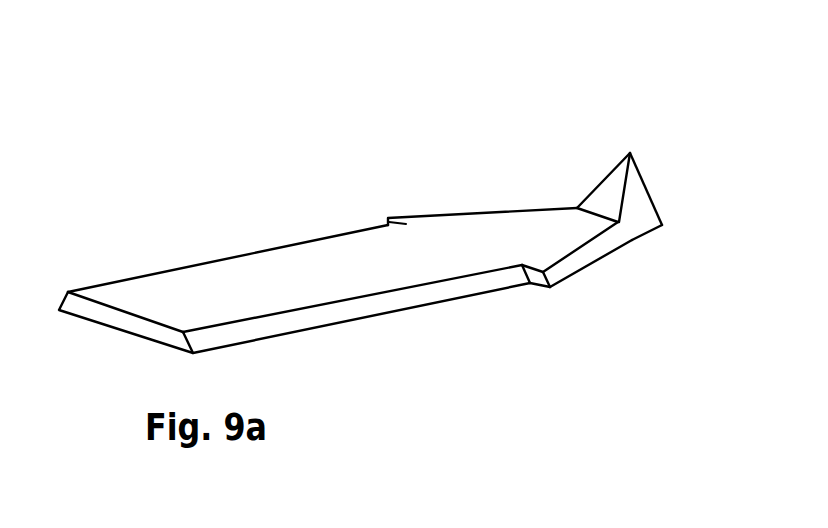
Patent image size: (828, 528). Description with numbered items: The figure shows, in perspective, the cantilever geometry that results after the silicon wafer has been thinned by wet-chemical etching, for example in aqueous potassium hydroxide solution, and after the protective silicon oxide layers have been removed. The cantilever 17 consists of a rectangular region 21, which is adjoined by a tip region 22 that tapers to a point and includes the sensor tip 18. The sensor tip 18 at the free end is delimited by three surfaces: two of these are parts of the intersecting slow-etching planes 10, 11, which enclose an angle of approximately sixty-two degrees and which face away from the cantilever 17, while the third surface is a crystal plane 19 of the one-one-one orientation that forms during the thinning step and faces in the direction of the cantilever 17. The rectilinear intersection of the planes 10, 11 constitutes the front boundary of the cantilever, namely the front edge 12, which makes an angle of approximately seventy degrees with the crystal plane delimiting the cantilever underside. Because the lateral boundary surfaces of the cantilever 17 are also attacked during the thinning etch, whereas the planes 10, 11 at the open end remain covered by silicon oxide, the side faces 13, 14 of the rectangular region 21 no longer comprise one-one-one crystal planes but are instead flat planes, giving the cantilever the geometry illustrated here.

The slow-etching plane 10 is at (609, 169).
The slow-etching plane 11 is at (642, 202).
The front edge 12 is at (640, 167).
The side face 13 is at (303, 317).
The side face 14 is at (168, 272).
The cantilever 17 is at (320, 264).
The sensor tip 18 is at (630, 153).
The (111)-crystal plane 19 is at (617, 195).
The rectangular region 21 is at (368, 273).
The tip region 22 is at (540, 230).